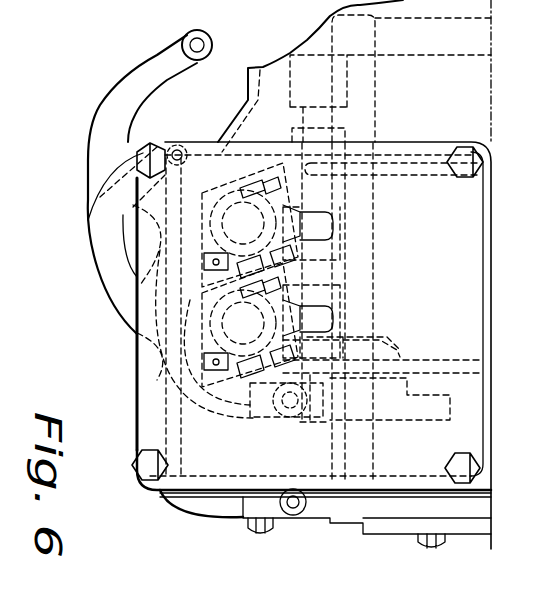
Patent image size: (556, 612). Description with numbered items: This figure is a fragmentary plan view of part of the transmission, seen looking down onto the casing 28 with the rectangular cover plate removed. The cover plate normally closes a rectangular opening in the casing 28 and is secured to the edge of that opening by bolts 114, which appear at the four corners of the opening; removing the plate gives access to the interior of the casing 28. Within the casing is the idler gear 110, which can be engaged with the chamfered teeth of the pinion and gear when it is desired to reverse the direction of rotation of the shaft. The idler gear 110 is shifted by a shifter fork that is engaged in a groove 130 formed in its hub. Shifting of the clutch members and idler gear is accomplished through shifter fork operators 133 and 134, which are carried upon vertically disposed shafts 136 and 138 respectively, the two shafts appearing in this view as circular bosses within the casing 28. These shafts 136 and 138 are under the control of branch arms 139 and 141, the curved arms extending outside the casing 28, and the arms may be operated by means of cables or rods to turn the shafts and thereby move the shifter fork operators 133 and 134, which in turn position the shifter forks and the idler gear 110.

The casing 28 is at (478, 108).
The idler gear 110 is at (432, 400).
The bolts 114 is at (140, 152).
The groove 130 is at (380, 367).
The shifter fork operator 133 is at (343, 250).
The shifter fork operator 134 is at (340, 296).
The vertically disposed shaft 136 is at (240, 208).
The vertically disposed shaft 138 is at (216, 297).
The branch arm 139 is at (112, 120).
The branch arm 141 is at (107, 275).